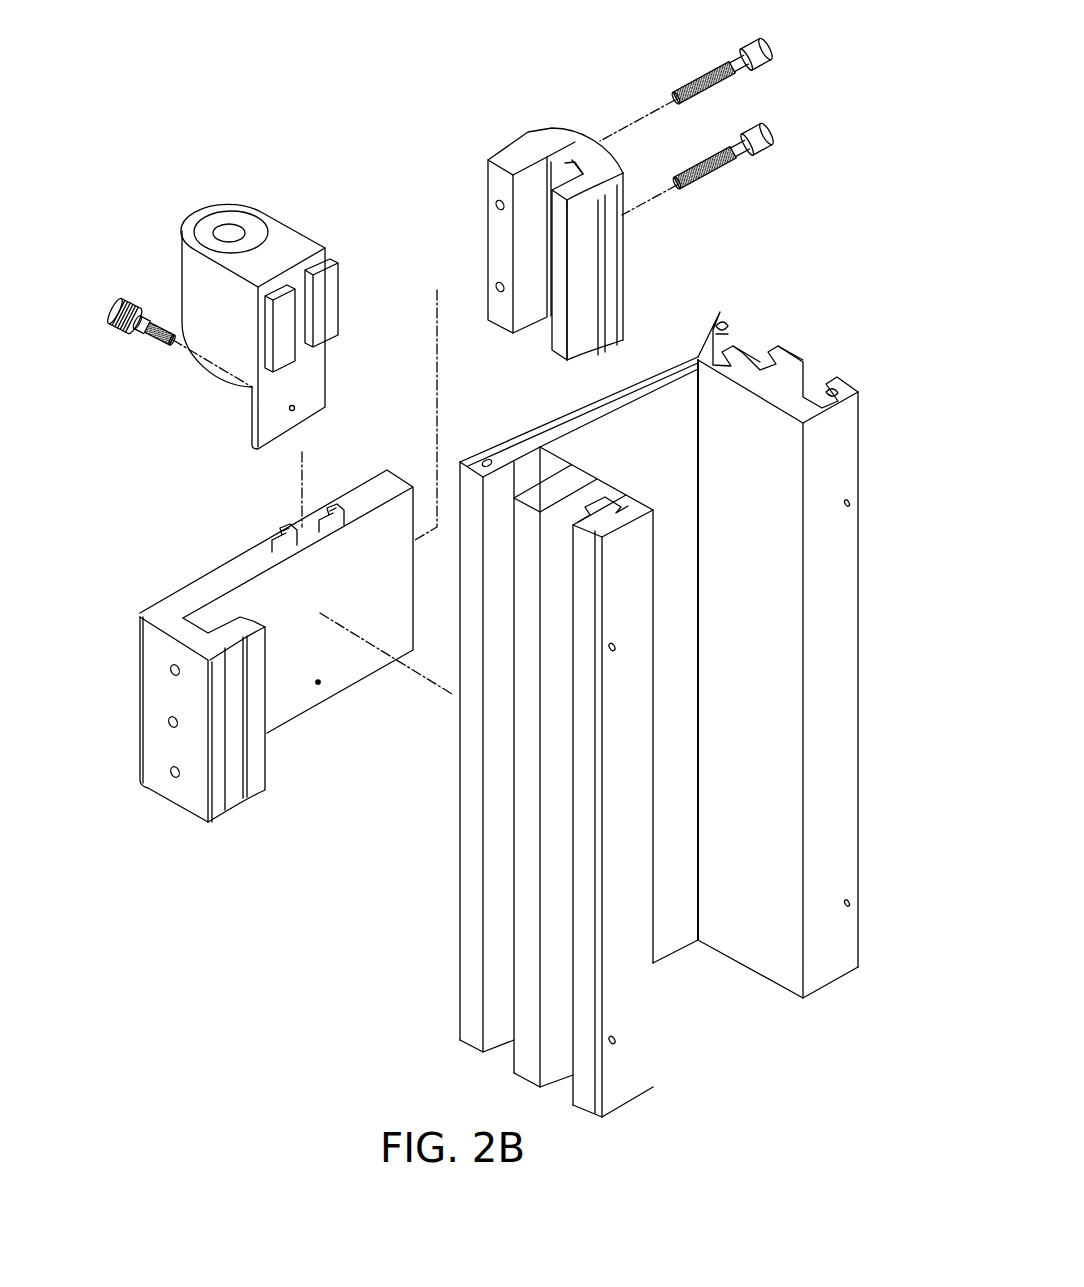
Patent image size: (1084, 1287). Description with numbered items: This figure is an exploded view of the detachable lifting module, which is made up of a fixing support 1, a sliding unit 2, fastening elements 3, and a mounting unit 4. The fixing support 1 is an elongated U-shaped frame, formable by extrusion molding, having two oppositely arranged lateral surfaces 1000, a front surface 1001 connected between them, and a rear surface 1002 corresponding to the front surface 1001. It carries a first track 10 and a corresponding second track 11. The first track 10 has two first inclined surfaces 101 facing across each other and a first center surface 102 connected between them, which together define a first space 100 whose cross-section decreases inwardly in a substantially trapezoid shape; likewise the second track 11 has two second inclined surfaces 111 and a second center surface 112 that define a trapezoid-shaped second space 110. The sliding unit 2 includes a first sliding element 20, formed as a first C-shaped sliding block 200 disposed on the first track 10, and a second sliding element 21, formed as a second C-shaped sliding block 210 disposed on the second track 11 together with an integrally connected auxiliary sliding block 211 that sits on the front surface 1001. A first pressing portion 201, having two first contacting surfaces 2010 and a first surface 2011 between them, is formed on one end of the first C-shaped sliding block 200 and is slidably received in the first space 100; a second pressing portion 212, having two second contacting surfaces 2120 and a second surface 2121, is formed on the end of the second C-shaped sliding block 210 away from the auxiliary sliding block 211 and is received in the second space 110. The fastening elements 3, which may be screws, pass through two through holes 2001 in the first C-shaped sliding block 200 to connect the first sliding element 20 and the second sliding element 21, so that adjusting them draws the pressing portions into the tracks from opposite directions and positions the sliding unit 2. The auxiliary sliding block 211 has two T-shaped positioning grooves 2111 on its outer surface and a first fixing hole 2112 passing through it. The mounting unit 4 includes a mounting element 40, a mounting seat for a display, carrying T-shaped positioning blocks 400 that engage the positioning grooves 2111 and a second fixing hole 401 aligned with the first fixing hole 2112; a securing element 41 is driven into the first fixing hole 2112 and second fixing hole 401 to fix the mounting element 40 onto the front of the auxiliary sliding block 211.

The fixing support 1 is at (794, 328).
The first track 10 is at (620, 683).
The second track 11 is at (446, 762).
The first space 100 is at (753, 345).
The first inclined surfaces 101 is at (720, 323).
The first center surface 102 is at (735, 352).
The second space 110 is at (507, 483).
The second inclined surfaces 111 is at (515, 608).
The second center surface 112 is at (550, 455).
The lateral surfaces 1000 is at (472, 928).
The front surface 1001 is at (641, 381).
The rear surface 1002 is at (822, 852).
The sliding unit 2 is at (543, 43).
The first sliding element 20 is at (540, 131).
The first C-shaped sliding block 200 is at (493, 158).
The first pressing portion 201 is at (578, 183).
The through holes 2001 is at (497, 206).
The first contacting surfaces 2010 is at (560, 180).
The first surface 2011 is at (553, 263).
The second sliding element 21 is at (249, 826).
The second C-shaped sliding block 210 is at (175, 702).
The auxiliary sliding block 211 is at (178, 585).
The second pressing portion 212 is at (240, 638).
The positioning grooves 2111 is at (274, 538).
The first fixing hole 2112 is at (322, 685).
The second contacting surfaces 2120 is at (234, 622).
The second surface 2121 is at (245, 620).
The fastening element 3 is at (689, 75).
The mounting unit 4 is at (328, 147).
The mounting element 40 is at (281, 212).
The positioning block 400 is at (287, 323).
The second fixing hole 401 is at (290, 410).
The securing element 41 is at (130, 292).